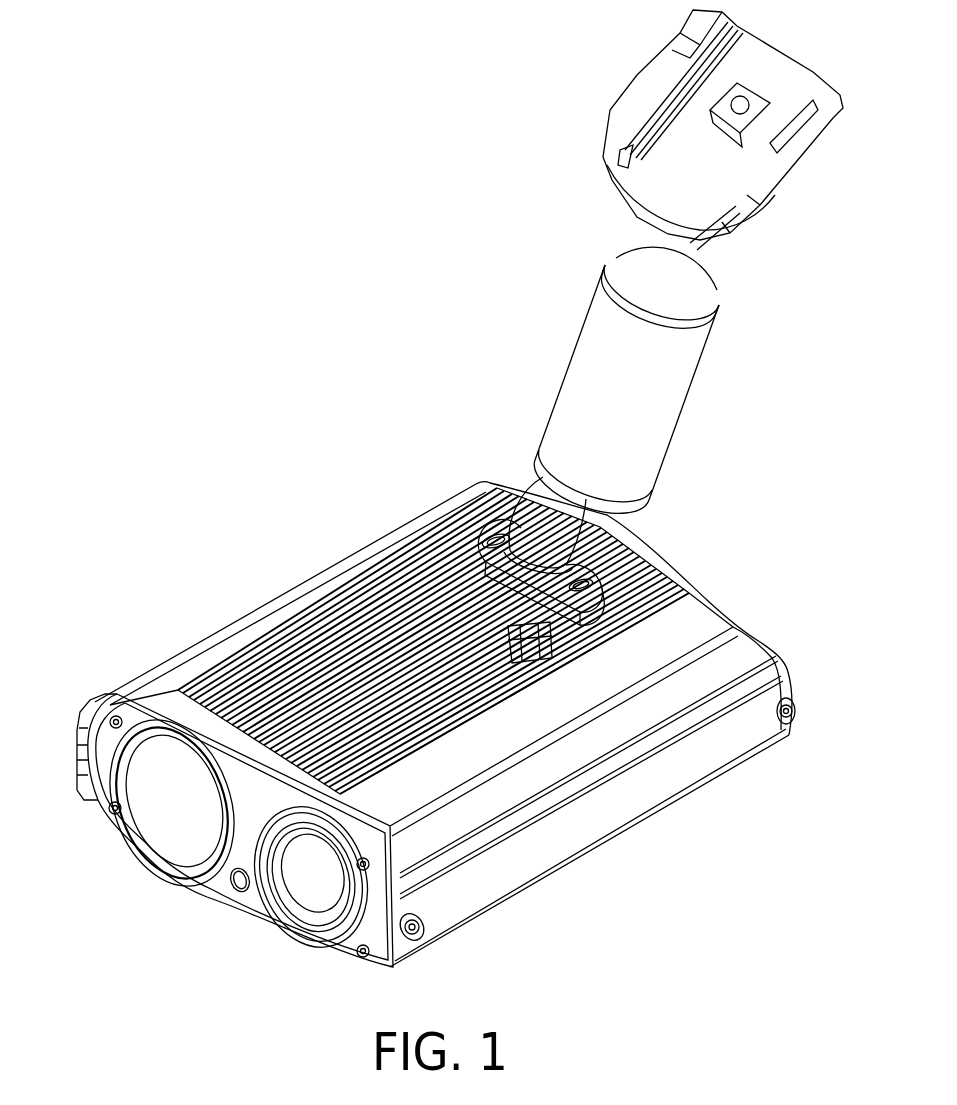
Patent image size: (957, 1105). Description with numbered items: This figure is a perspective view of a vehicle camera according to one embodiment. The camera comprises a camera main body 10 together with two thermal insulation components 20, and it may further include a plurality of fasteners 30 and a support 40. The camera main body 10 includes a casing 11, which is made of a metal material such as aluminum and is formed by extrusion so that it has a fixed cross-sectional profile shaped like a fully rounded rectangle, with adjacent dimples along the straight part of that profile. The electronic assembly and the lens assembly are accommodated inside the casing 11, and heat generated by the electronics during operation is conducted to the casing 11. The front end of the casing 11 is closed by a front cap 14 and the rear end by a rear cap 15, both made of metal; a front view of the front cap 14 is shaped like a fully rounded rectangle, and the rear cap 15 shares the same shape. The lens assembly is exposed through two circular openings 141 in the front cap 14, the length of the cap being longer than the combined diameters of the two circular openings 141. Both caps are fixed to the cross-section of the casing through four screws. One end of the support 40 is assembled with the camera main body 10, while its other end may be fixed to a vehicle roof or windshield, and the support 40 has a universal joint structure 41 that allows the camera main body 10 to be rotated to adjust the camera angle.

The camera main body 10 is at (206, 897).
The casing 11 is at (675, 578).
The front cap 14 is at (180, 713).
The circular openings 141 is at (141, 846).
The rear cap 15 is at (658, 556).
The thermal insulation components 20 is at (225, 630).
The fasteners 30 is at (797, 711).
The support 40 is at (583, 350).
The universal joint structure 41 is at (707, 281).